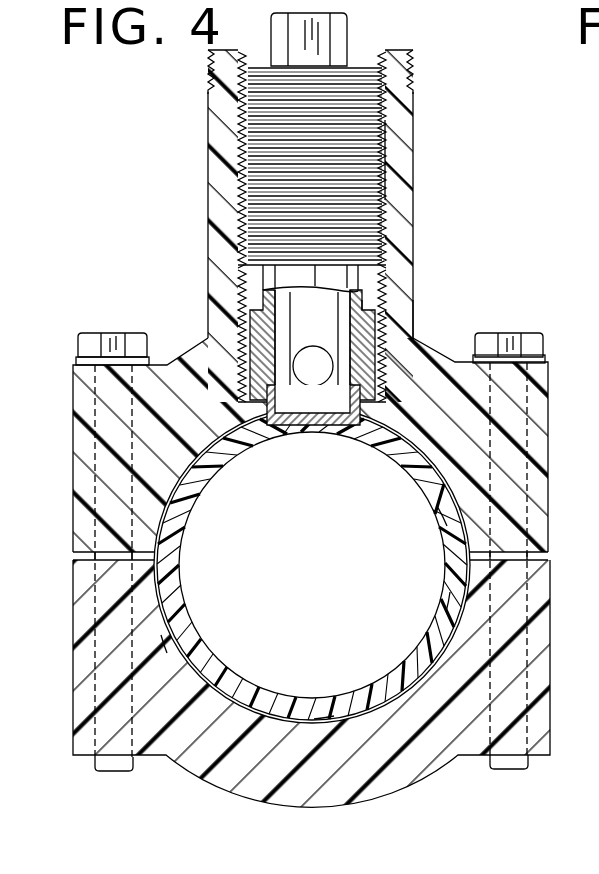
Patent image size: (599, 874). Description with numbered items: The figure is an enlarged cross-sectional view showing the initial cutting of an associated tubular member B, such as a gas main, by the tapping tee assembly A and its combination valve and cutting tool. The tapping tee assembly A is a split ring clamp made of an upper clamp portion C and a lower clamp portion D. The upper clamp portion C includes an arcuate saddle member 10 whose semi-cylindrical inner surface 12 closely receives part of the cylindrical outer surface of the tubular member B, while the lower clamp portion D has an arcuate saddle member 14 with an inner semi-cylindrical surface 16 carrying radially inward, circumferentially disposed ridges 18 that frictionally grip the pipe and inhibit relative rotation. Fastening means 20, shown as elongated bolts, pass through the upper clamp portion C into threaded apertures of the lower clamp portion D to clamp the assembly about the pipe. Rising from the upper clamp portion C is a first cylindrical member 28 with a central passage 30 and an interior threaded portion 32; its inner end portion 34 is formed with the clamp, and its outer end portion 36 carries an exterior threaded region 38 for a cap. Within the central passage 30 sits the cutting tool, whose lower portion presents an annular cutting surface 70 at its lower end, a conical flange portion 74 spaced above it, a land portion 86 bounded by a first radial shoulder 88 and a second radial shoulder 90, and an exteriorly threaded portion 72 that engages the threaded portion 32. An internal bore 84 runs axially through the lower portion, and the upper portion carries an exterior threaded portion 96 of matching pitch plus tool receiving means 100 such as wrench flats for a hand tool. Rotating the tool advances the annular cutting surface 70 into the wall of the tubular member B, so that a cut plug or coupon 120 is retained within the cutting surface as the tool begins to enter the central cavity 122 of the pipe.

The arcuate saddle member 10 is at (165, 490).
The semi-cylindrical inner surface 12 is at (412, 453).
The arcuate saddle member 14 is at (167, 653).
The inner semi-cylindrical surface 16 is at (450, 592).
The ridges 18 is at (334, 716).
The fastening means 20 is at (114, 334).
The first cylindrical member 28 is at (216, 167).
The central passage 30 is at (392, 409).
The threaded portion 32 is at (386, 296).
The inner end portion 34 is at (413, 321).
The outer end portion 36 is at (413, 139).
The exterior threaded region 38 is at (414, 64).
The annular cutting surface 70 is at (348, 418).
The exteriorly threaded portion 72 is at (263, 166).
The conical flange portion 74 is at (262, 336).
The internal bore 84 is at (313, 408).
The land portion 86 is at (262, 268).
The first radial shoulder 88 is at (240, 285).
The second radial shoulder 90 is at (372, 290).
The exterior threaded portion 96 is at (263, 160).
The tool receiving means 100 is at (340, 23).
The cut plug or coupon 120 is at (300, 428).
The central cavity 122 is at (437, 506).
The tapping tee assembly A is at (417, 208).
The tubular member B is at (292, 690).
The upper clamp portion C is at (550, 494).
The lower clamp portion D is at (431, 788).